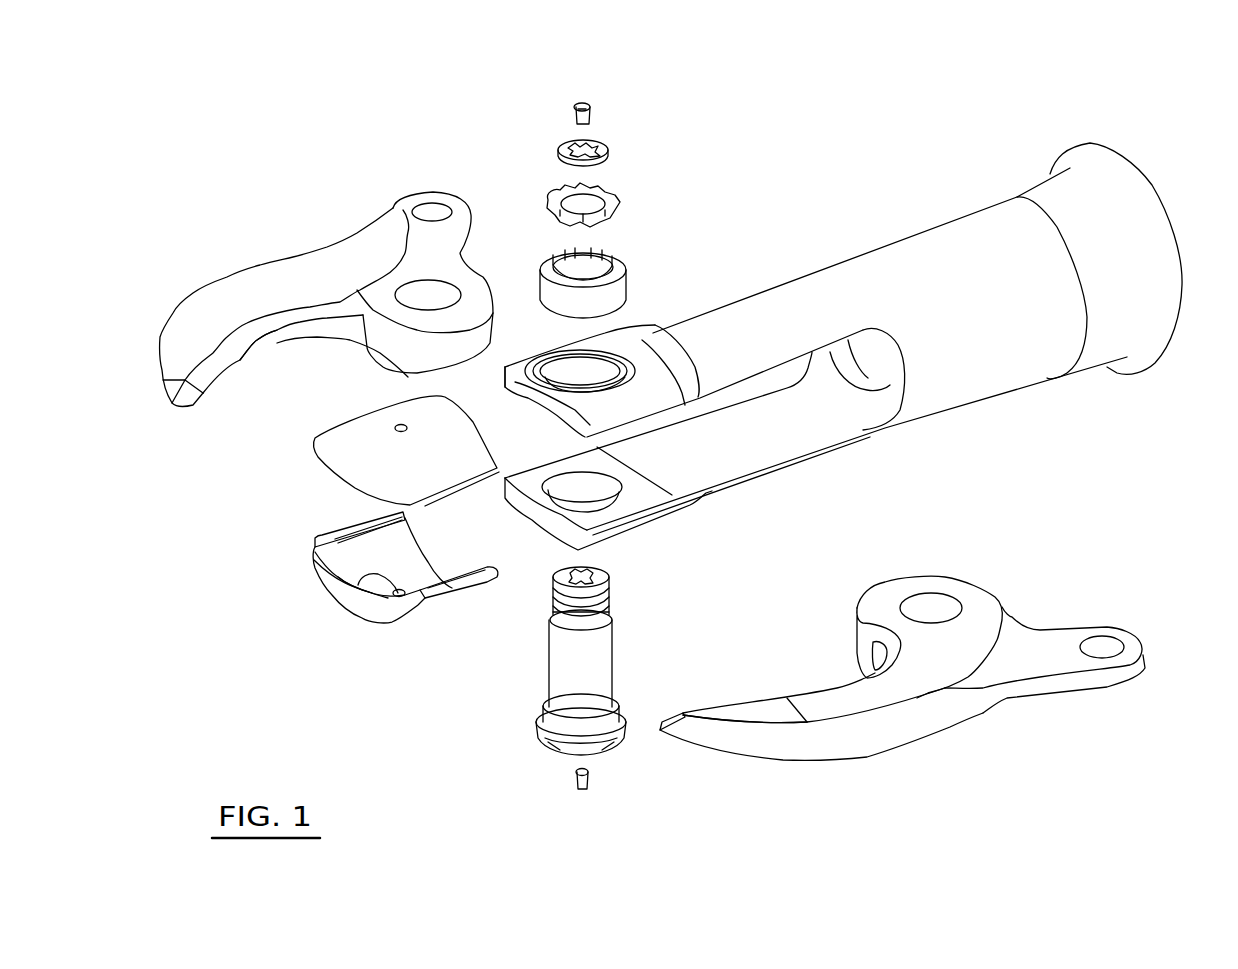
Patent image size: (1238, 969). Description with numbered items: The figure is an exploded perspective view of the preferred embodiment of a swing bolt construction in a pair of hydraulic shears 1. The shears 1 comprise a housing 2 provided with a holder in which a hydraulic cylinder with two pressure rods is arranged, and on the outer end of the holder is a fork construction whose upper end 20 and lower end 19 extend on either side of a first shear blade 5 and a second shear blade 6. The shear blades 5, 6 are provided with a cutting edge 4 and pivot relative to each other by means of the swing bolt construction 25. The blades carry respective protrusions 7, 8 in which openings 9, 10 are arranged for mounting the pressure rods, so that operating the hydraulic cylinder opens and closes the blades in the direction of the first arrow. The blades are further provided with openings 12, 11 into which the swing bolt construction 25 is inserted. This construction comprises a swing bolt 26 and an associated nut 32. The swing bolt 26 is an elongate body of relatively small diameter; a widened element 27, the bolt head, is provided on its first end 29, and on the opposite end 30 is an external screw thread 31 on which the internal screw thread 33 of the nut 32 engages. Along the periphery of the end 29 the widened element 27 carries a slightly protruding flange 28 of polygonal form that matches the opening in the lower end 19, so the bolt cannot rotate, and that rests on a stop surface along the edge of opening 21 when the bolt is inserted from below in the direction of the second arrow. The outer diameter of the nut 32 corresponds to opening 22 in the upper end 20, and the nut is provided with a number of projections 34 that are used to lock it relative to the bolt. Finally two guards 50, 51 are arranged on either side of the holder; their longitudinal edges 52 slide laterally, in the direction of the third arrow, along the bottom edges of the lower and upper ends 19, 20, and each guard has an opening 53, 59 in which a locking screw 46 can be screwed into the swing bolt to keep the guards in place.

The shears 1 is at (792, 208).
The housing 2 is at (928, 240).
The cutting edge 4 is at (273, 337).
The first shear blade 5 is at (893, 733).
The second shear blade 6 is at (320, 273).
The protrusion 7 is at (1133, 672).
The protrusion 8 is at (457, 203).
The opening 9 is at (1095, 643).
The opening 10 is at (427, 208).
The opening 11 is at (935, 600).
The opening 12 is at (417, 300).
The lower end of fork 19 is at (530, 520).
The upper end of fork 20 is at (530, 400).
The opening in lower part 21 is at (588, 505).
The opening in upper end 22 is at (570, 370).
The swing bolt construction 25 is at (487, 713).
The swing bolt 26 is at (597, 653).
The widened element (bolt head) 27 is at (617, 700).
The protruding flange 28 is at (540, 733).
The first end 29 is at (637, 738).
The opposite end 30 is at (627, 577).
The external screw thread 31 is at (607, 603).
The nut 32 is at (617, 292).
The internal screw thread 33 is at (592, 273).
The projections 34 is at (560, 253).
The locking screw 46 is at (587, 97).
The guard 50 is at (368, 607).
The guard 51 is at (343, 465).
The longitudinal edges 52 is at (342, 538).
The opening 53 is at (398, 425).
The opening 59 is at (360, 582).